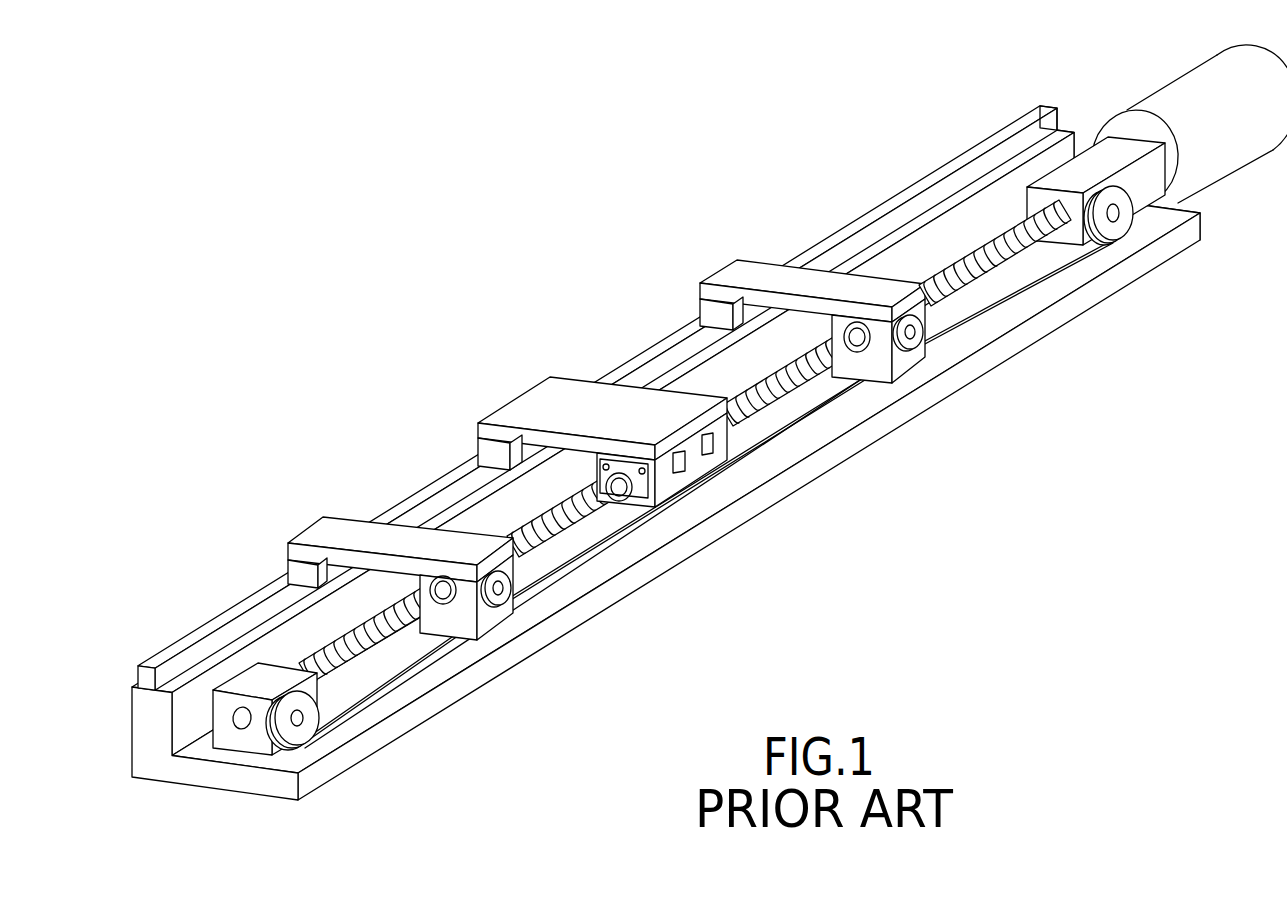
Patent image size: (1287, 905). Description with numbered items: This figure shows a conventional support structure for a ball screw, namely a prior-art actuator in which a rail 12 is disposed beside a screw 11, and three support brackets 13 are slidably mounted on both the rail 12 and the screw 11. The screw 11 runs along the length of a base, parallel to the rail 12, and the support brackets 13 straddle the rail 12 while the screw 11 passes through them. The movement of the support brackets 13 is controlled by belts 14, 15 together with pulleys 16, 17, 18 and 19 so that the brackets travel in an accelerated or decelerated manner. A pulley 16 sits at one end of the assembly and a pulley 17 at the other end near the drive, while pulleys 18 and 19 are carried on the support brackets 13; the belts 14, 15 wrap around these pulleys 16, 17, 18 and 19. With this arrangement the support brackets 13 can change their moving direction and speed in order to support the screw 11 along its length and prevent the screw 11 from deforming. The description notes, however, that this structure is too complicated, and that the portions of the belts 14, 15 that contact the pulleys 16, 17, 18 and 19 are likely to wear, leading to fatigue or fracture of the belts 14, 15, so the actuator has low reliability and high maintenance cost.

The screw 11 is at (760, 420).
The rail 12 is at (663, 348).
The support brackets 13 is at (535, 395).
The belt 14 is at (573, 572).
The belt 15 is at (613, 533).
The pulley 16 is at (312, 717).
The pulley 17 is at (1118, 225).
The pulley 18 is at (507, 603).
The pulley 19 is at (923, 333).